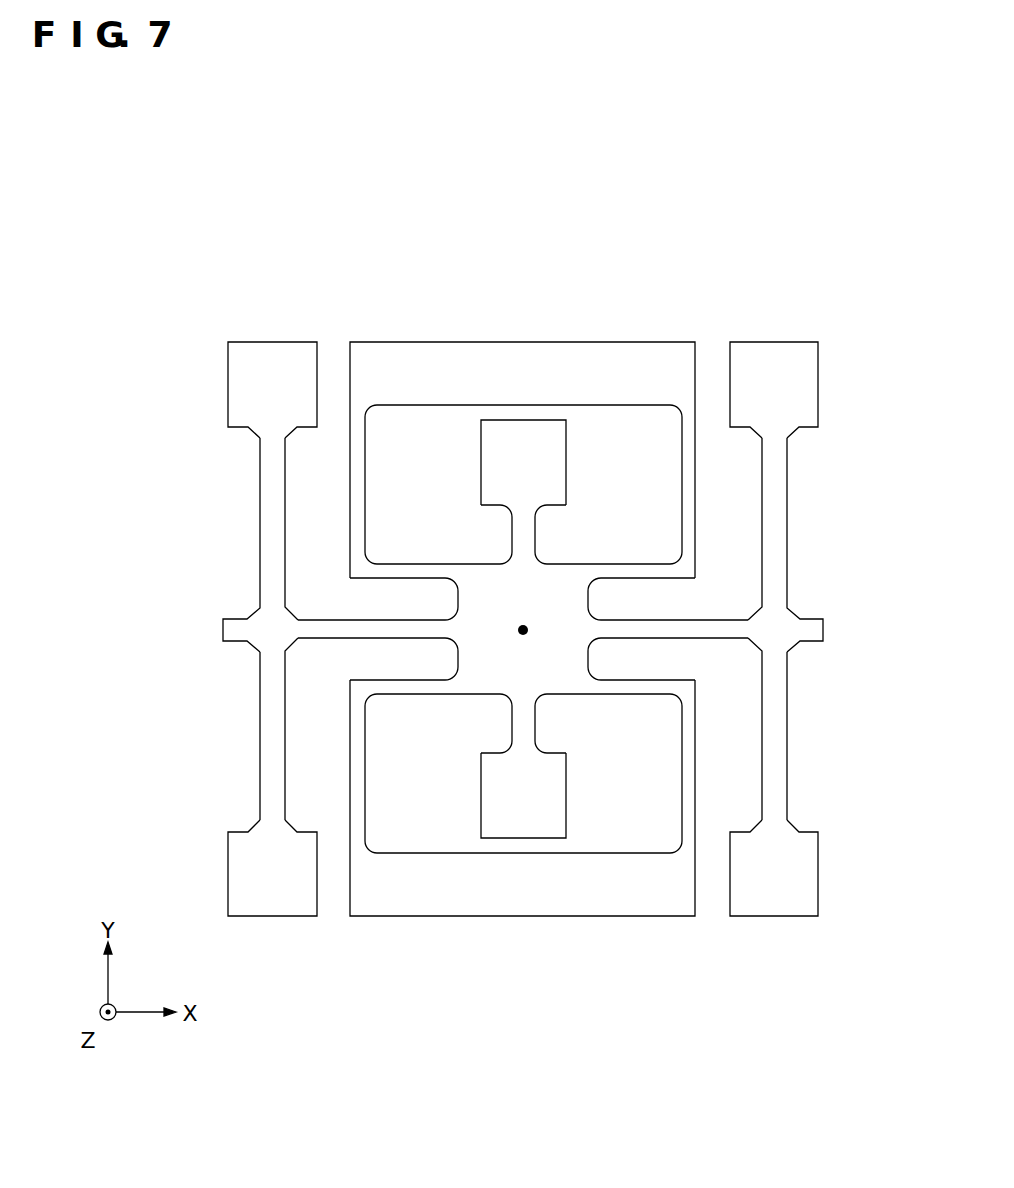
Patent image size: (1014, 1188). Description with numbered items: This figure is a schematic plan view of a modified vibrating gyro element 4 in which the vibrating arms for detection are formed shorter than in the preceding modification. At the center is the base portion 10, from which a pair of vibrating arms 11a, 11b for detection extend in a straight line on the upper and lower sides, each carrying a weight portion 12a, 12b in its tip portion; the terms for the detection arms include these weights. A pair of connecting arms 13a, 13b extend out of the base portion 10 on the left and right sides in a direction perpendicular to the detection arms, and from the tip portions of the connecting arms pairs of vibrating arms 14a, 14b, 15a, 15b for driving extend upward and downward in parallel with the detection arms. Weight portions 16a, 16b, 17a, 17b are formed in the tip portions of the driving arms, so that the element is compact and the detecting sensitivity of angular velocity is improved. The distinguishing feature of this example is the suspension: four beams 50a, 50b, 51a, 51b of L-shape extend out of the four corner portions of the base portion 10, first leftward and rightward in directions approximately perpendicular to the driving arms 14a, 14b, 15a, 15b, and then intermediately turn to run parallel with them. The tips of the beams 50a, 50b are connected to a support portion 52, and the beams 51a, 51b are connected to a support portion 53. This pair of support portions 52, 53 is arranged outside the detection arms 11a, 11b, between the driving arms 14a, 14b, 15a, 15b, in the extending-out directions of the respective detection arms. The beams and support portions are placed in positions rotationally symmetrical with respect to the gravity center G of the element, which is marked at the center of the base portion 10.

The vibrating gyro element 4 is at (833, 251).
The base portion 10 is at (578, 660).
The vibrating arm for detection 11a is at (538, 541).
The vibrating arm for detection 11b is at (536, 718).
The weight portion 12a is at (567, 458).
The weight portion 12b is at (567, 797).
The connecting arm 13a is at (330, 623).
The connecting arm 13b is at (726, 623).
The vibrating arm for driving 14a is at (264, 518).
The vibrating arm for driving 14b is at (264, 736).
The vibrating arm for driving 15a is at (784, 518).
The vibrating arm for driving 15b is at (784, 736).
The weight portion 16a is at (232, 379).
The weight portion 16b is at (232, 870).
The weight portion 17a is at (814, 382).
The weight portion 17b is at (814, 872).
The beam 50a is at (365, 508).
The beam 50b is at (686, 508).
The beam 51a is at (365, 771).
The beam 51b is at (686, 771).
The support portion 52 is at (524, 343).
The support portion 53 is at (523, 914).
The gravity center G is at (522, 612).